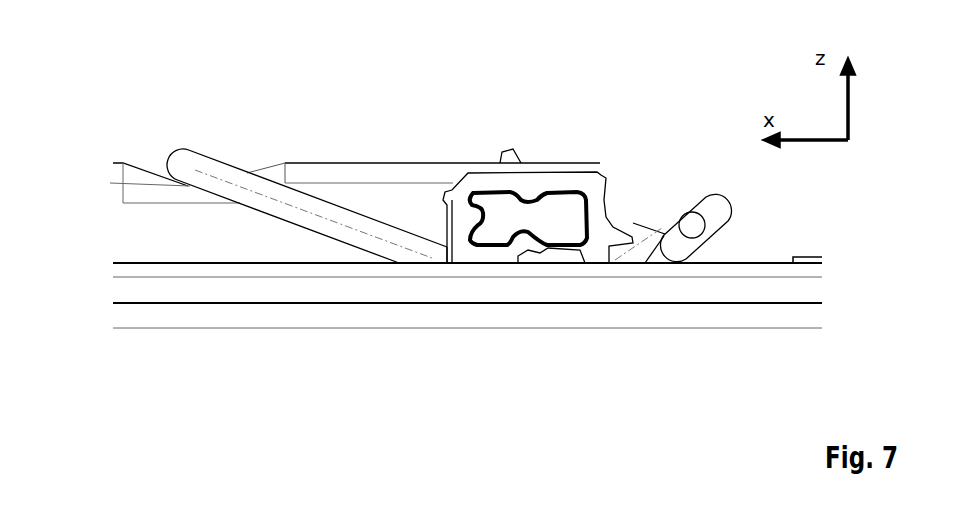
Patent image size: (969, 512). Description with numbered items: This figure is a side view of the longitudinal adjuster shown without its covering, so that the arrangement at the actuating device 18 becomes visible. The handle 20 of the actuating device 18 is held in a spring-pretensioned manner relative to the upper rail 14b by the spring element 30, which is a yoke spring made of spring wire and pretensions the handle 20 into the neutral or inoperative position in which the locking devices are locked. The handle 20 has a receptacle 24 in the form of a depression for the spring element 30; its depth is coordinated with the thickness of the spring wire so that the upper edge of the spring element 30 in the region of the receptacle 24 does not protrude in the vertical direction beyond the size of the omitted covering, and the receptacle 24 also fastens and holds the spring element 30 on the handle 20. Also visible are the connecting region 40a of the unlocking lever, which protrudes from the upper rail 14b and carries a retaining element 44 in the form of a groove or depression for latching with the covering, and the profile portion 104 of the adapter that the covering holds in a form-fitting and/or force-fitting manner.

The actuating device 18 is at (116, 87).
The receptacle 24 is at (150, 172).
The spring element 30 is at (297, 202).
The handle 20 is at (420, 167).
The profile portion 104 is at (522, 217).
The connecting region 40a is at (582, 173).
The retaining element 44 is at (605, 182).
The upper rail 14b is at (327, 288).